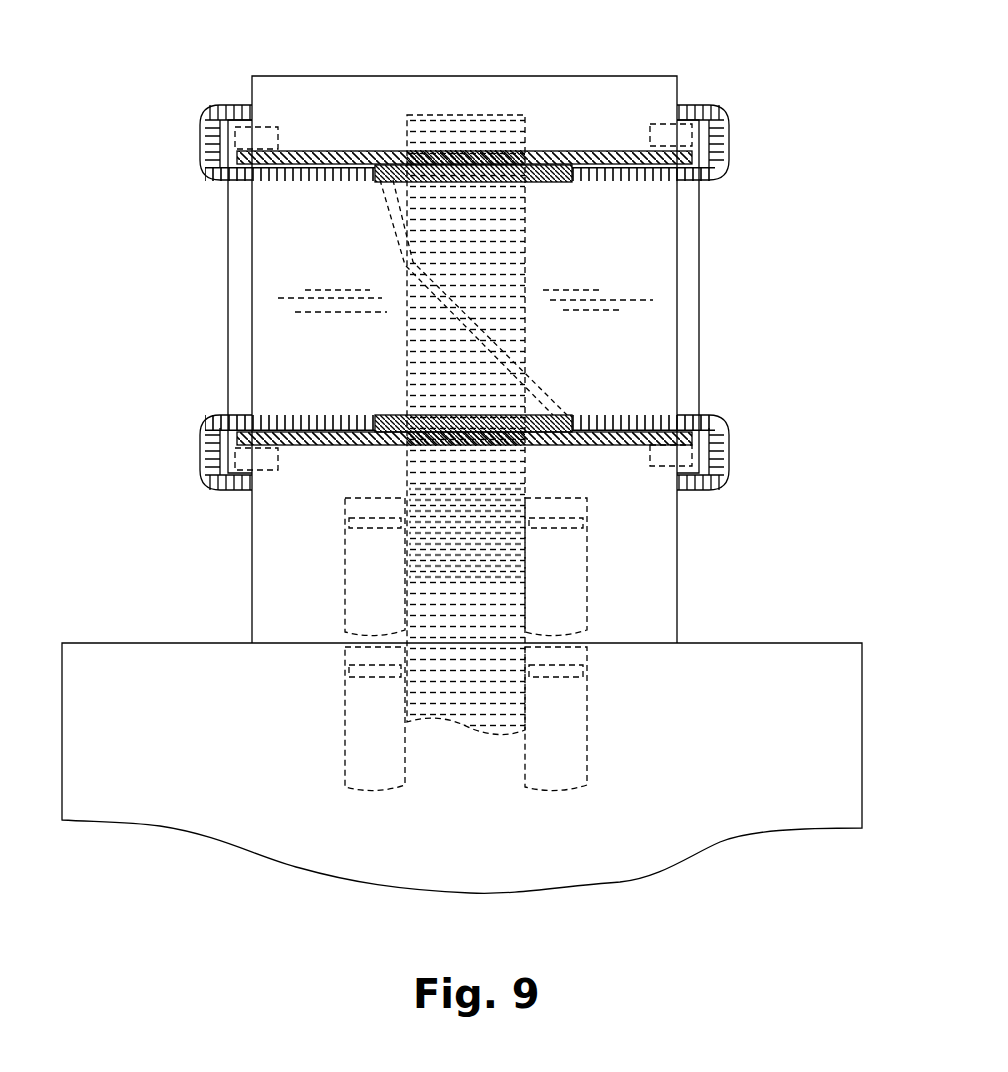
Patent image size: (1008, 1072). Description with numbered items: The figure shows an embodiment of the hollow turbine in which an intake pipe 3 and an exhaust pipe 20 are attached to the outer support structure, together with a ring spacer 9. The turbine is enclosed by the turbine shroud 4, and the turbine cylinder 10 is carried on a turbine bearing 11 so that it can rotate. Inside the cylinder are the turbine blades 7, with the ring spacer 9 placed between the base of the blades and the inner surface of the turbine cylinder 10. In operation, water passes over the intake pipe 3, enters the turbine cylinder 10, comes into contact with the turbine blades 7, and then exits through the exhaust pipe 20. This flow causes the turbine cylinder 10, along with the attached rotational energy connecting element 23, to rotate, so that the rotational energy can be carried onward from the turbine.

The intake pipe 3 is at (609, 181).
The turbine shroud 4 is at (228, 231).
The turbine blades 7 is at (390, 228).
The ring spacer 9 is at (534, 181).
The turbine cylinder 10 is at (317, 151).
The turbine bearing 11 is at (280, 457).
The exhaust pipe 20 is at (288, 182).
The rotational energy connecting element 23 is at (486, 258).